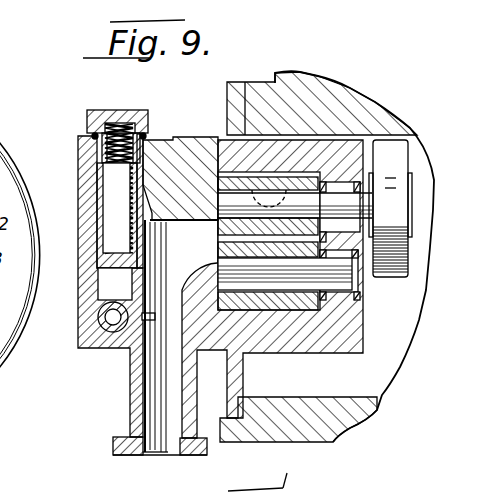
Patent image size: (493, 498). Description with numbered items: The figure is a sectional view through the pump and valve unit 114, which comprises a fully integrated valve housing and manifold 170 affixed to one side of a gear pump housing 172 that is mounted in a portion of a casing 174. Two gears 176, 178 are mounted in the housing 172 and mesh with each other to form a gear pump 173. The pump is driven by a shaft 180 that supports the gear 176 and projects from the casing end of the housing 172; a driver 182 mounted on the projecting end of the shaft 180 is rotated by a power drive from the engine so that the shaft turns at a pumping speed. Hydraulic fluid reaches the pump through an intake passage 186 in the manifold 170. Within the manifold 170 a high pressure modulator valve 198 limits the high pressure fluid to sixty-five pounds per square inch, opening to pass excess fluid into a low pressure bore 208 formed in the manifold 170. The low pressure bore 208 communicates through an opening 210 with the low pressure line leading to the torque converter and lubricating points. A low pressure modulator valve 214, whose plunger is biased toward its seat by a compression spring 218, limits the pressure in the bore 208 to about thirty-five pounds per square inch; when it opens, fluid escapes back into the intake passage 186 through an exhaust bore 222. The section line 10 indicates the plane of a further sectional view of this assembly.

The section line 10 is at (140, 93).
The unit 114 is at (133, 465).
The valve housing and manifold 170 is at (80, 332).
The gear pump housing 172 is at (333, 353).
The gear pump 173 is at (374, 287).
The casing 174 is at (323, 427).
The gear 176 is at (300, 176).
The gear 178 is at (310, 300).
The shaft 180 is at (295, 204).
The driver 182 is at (388, 160).
The intake passage 186 is at (182, 433).
The high pressure modulator valve 198 is at (88, 324).
The low pressure bore 208 is at (115, 283).
The opening 210 is at (98, 308).
The low pressure modulator valve 214 is at (88, 233).
The compression spring 218 is at (100, 188).
The exhaust bore 222 is at (147, 248).